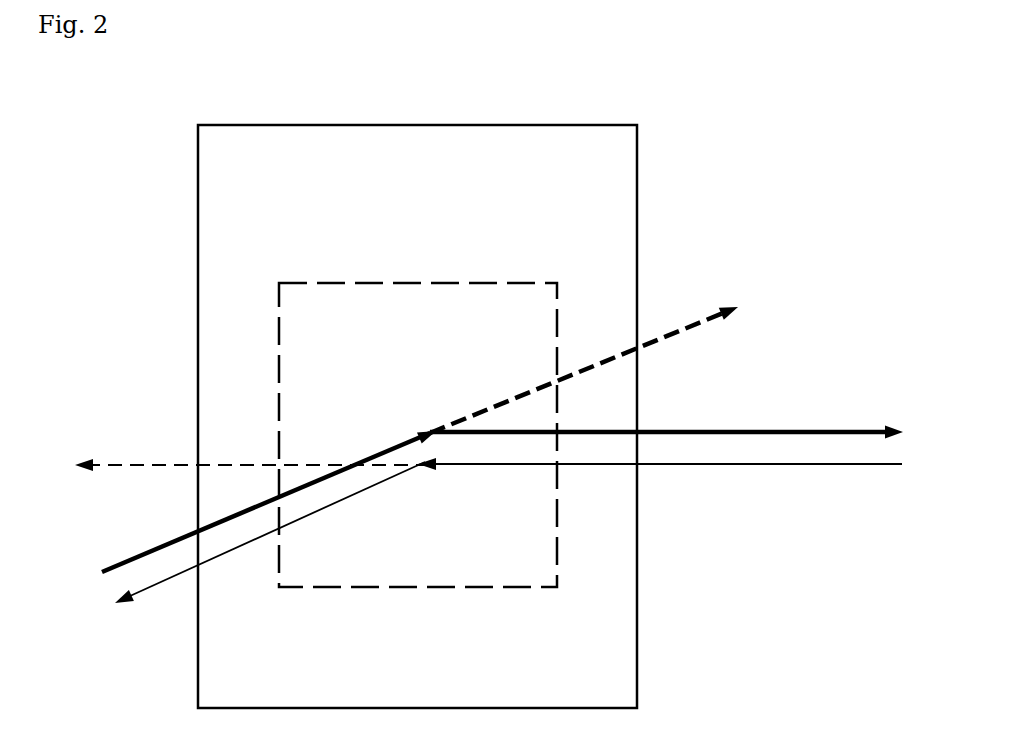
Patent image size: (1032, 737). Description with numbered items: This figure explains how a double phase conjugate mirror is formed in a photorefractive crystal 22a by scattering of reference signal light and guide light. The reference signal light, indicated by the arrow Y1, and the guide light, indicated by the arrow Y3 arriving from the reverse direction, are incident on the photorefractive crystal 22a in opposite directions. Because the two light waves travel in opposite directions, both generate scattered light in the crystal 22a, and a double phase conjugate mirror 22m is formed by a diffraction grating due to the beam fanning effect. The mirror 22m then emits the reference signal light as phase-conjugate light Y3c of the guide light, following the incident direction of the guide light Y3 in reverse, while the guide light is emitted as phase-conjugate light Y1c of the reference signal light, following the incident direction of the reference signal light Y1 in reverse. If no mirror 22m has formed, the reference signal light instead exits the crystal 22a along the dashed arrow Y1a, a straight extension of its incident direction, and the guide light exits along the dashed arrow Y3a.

The photorefractive crystal 22a is at (418, 126).
The double phase conjugate mirror 22m is at (417, 282).
The reference signal light Y1 is at (162, 548).
The dashed arrow Y1a is at (680, 335).
The phase-conjugate light of the reference signal light Y1c is at (165, 588).
The guide light Y3 is at (810, 467).
The dashed arrow Y3a is at (140, 462).
The phase-conjugate light of the guide light Y3c is at (817, 430).